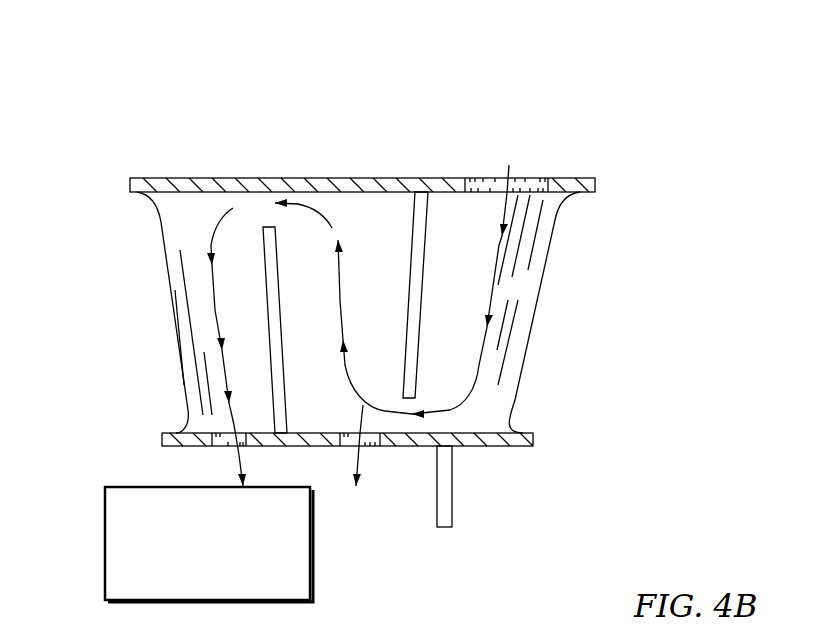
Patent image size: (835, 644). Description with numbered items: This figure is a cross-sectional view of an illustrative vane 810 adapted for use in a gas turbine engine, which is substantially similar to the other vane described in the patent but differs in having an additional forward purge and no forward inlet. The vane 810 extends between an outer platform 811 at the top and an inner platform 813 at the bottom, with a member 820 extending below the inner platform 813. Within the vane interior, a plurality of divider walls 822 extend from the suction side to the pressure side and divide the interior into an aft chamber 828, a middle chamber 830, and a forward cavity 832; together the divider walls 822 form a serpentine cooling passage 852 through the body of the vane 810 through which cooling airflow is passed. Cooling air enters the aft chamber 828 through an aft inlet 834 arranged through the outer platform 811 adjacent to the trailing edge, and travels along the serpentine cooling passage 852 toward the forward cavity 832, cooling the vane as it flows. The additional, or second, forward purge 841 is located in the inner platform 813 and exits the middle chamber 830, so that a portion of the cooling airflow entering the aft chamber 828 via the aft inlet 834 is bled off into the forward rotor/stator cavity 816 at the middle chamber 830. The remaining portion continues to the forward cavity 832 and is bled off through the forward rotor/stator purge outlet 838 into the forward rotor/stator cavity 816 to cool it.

The vane 810 is at (473, 110).
The outer platform 811 is at (188, 178).
The inner platform 813 is at (518, 447).
The forward rotor/stator cavity 816 is at (105, 535).
The support arm 820 is at (445, 530).
The divider walls 822 is at (270, 227).
The aft chamber 828 is at (532, 297).
The middle chamber 830 is at (358, 178).
The forward cavity 832 is at (180, 232).
The aft inlet 834 is at (517, 176).
The forward rotor/stator purge outlet 838 is at (244, 446).
The additional forward purge 841 is at (373, 448).
The serpentine cooling passage 852 is at (400, 103).